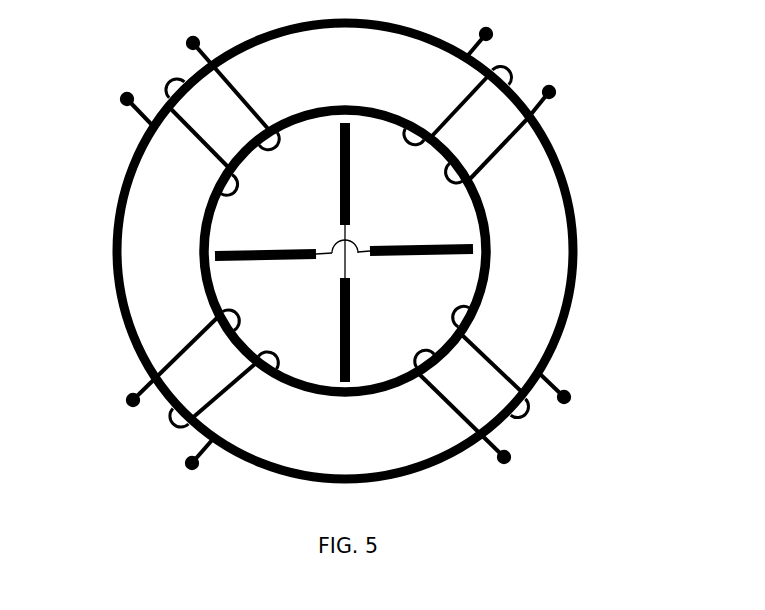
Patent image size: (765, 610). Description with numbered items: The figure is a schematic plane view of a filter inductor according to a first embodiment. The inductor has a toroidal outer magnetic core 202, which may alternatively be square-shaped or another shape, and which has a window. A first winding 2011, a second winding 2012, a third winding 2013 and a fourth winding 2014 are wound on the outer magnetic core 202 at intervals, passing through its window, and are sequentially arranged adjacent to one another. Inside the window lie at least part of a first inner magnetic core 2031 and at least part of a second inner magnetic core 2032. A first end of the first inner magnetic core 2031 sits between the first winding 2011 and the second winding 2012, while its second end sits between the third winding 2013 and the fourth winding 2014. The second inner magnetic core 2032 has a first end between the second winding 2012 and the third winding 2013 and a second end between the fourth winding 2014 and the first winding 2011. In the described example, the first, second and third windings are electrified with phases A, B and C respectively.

The outer magnetic core 202 is at (557, 190).
The first winding 2011 is at (137, 113).
The second winding 2012 is at (542, 105).
The third winding 2013 is at (552, 382).
The fourth winding 2014 is at (140, 392).
The first inner magnetic core 2031 is at (348, 158).
The second inner magnetic core 2032 is at (243, 258).